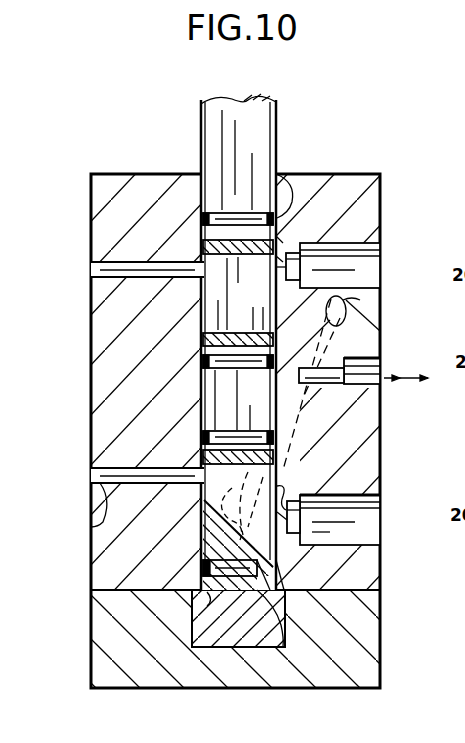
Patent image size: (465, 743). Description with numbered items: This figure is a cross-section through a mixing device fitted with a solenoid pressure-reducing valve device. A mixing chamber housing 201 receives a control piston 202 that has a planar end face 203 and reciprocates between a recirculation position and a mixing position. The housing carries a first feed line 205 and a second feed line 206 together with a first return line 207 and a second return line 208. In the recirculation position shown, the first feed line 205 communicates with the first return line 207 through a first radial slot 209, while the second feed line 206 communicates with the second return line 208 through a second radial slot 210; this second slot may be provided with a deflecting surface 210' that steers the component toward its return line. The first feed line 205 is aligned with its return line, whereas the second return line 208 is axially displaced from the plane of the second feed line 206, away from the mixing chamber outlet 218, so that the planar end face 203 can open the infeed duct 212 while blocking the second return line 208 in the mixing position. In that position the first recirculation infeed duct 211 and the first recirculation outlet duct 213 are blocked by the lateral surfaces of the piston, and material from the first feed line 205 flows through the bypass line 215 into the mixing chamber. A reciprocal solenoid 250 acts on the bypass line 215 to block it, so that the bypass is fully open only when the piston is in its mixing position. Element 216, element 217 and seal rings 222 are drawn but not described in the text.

The mixing chamber housing 201 is at (91, 352).
The control piston 202 is at (278, 132).
The planar end face 203 is at (186, 592).
The first feed line 205 is at (381, 263).
The second feed line 206 is at (340, 496).
The first return line 207 is at (91, 270).
The second return line 208 is at (91, 526).
The first radial slot 209 is at (214, 325).
The second radial slot 210 is at (205, 451).
The deflecting surface 210' is at (300, 573).
The first recirculation infeed duct 211 is at (289, 222).
The infeed duct 212 is at (285, 467).
The first recirculation outlet duct 213 is at (200, 247).
The bypass line 215 is at (346, 306).
The valve member 216 is at (201, 518).
The rod tip 217 is at (276, 591).
The mixing chamber outlet 218 is at (284, 627).
The seal ring 222 is at (278, 215).
The reciprocal solenoid 250 is at (362, 392).